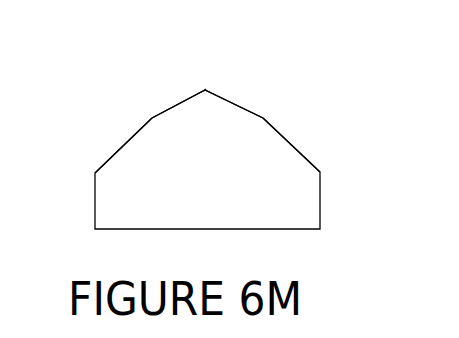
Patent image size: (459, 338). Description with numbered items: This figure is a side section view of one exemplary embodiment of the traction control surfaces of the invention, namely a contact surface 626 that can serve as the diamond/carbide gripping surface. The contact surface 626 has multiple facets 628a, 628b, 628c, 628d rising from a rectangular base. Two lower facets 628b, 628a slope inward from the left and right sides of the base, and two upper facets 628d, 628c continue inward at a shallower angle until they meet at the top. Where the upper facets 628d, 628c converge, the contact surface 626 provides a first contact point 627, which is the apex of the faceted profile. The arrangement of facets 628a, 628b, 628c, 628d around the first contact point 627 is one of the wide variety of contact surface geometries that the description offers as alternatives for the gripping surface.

The contact surface 626 is at (320, 192).
The first contact point 627 is at (205, 90).
The facet 628a is at (292, 135).
The facet 628b is at (137, 128).
The facet 628c is at (228, 97).
The facet 628d is at (174, 103).